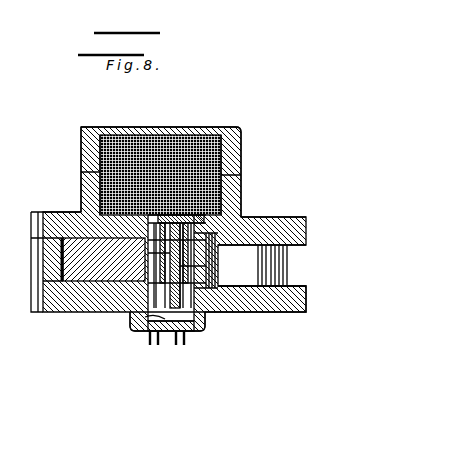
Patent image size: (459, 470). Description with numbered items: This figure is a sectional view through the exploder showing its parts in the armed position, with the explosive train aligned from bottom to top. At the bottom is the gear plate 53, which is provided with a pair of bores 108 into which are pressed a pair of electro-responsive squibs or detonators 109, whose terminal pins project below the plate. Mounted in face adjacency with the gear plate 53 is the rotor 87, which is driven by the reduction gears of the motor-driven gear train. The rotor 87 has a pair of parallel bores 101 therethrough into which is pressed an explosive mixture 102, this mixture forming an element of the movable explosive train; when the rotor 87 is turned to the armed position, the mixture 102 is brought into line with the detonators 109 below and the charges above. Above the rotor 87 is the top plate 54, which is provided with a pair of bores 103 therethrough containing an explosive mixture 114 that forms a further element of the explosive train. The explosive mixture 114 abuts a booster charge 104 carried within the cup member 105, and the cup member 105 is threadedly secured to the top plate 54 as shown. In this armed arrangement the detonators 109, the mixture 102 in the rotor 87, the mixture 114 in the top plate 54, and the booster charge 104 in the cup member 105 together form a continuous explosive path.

The gear plate 53 is at (298, 301).
The top plate 54 is at (293, 210).
The rotor 87 is at (104, 263).
The bores 101 is at (210, 261).
The explosive mixture 102 is at (208, 247).
The bores 103 is at (176, 229).
The booster charge 104 is at (157, 164).
The cup member 105 is at (234, 122).
The bores 108 is at (123, 308).
The electro-responsive squibs or detonators 109 is at (138, 327).
The explosive mixture 114 is at (178, 212).